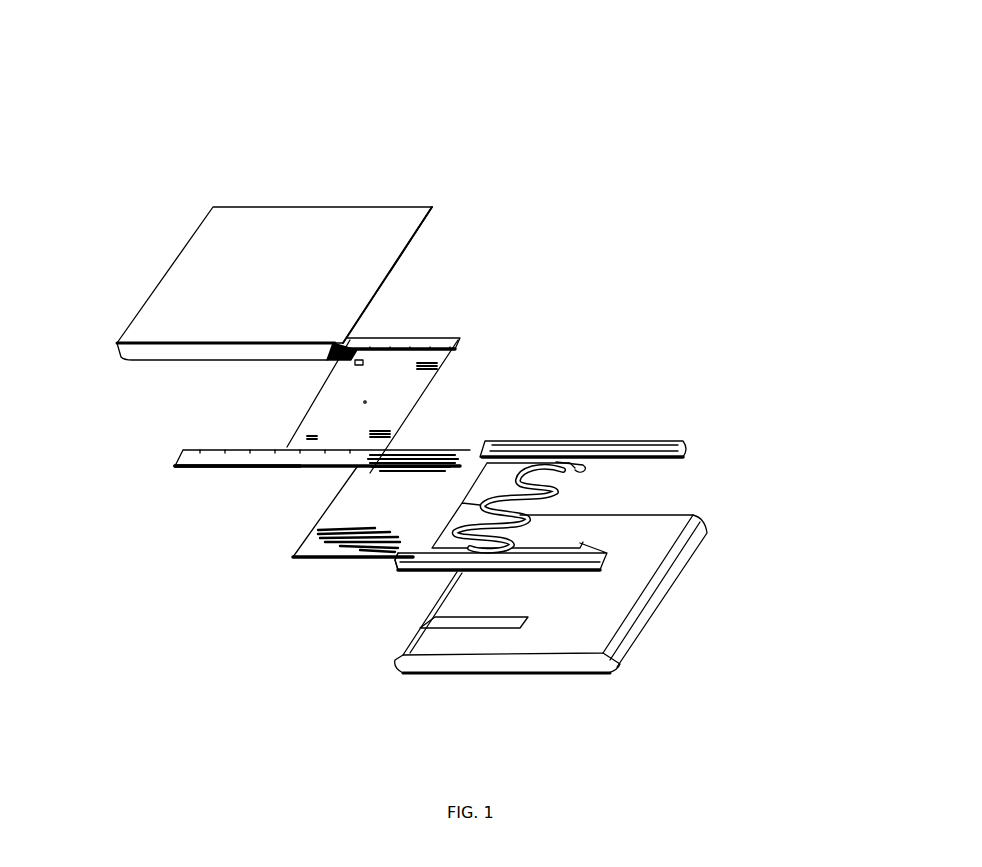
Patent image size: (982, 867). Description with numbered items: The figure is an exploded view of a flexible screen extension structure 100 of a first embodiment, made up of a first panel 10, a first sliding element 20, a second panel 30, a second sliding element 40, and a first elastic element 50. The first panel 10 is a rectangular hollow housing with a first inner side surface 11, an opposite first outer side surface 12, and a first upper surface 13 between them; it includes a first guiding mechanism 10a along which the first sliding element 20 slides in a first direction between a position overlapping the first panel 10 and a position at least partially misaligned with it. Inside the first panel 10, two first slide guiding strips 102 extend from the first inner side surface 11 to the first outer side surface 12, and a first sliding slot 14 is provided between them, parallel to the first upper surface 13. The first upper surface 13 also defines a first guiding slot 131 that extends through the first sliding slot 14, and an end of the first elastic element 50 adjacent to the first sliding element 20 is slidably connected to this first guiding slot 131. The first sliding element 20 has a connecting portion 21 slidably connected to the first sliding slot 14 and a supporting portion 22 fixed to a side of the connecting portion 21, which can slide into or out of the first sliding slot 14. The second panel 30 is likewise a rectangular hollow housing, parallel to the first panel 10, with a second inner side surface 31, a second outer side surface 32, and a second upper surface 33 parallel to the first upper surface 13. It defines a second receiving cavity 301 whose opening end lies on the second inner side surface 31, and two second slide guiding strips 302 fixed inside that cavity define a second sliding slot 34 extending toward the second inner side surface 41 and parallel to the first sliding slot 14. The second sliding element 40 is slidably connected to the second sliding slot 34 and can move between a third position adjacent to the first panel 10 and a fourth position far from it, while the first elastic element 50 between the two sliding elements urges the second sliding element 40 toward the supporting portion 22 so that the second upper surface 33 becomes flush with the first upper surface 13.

The flexible screen extension structure 100 is at (555, 104).
The second panel 30 is at (175, 190).
The second upper surface 33 is at (313, 226).
The second outer side surface 32 is at (155, 282).
The second inner side surface 31 is at (400, 264).
The second receiving cavity 301 is at (410, 278).
The second sliding slot 34 is at (240, 445).
The second slide guiding strip 302 is at (258, 468).
The second sliding element 40 is at (335, 402).
The second inner side surface 41 is at (445, 352).
The first sliding element 20 is at (257, 575).
The supporting portion 22 is at (353, 510).
The connecting portion 21 is at (502, 442).
The first elastic element 50 is at (330, 563).
The first sliding slot 14 is at (605, 447).
The first slide guiding strip 102 is at (637, 445).
The first panel 10 is at (690, 500).
The first upper surface 13 is at (621, 517).
The first outer side surface 12 is at (655, 605).
The first guiding slot 131 is at (490, 623).
The first inner side surface 11 is at (443, 585).
The first guiding mechanism 10a is at (422, 573).